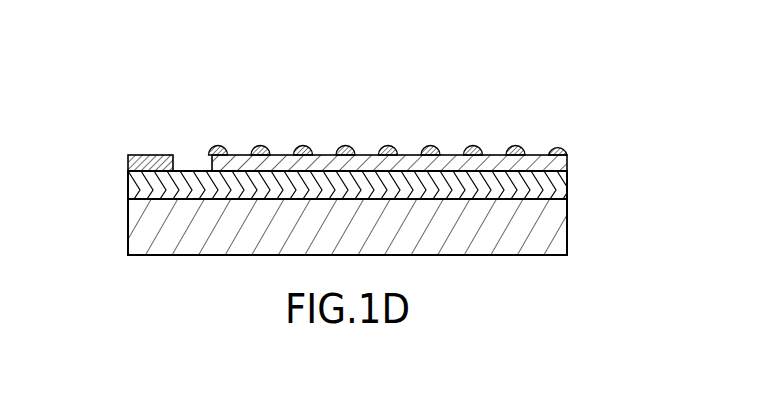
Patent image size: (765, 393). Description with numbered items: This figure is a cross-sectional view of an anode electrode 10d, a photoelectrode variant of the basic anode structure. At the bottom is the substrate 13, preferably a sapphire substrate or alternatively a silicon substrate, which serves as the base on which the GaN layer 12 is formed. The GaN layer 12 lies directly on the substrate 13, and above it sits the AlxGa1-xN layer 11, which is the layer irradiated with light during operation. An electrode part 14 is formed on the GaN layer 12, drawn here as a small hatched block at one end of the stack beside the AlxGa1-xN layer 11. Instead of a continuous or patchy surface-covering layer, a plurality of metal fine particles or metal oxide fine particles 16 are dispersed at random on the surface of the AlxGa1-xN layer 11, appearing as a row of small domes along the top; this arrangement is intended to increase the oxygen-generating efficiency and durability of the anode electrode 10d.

The anode electrode 10d is at (468, 105).
The AlxGa1-xN layer 11 is at (555, 162).
The GaN layer 12 is at (553, 187).
The substrate 13 is at (553, 231).
The electrode part 14 is at (131, 163).
The metal fine particles or metal oxide fine particles 16 is at (559, 147).